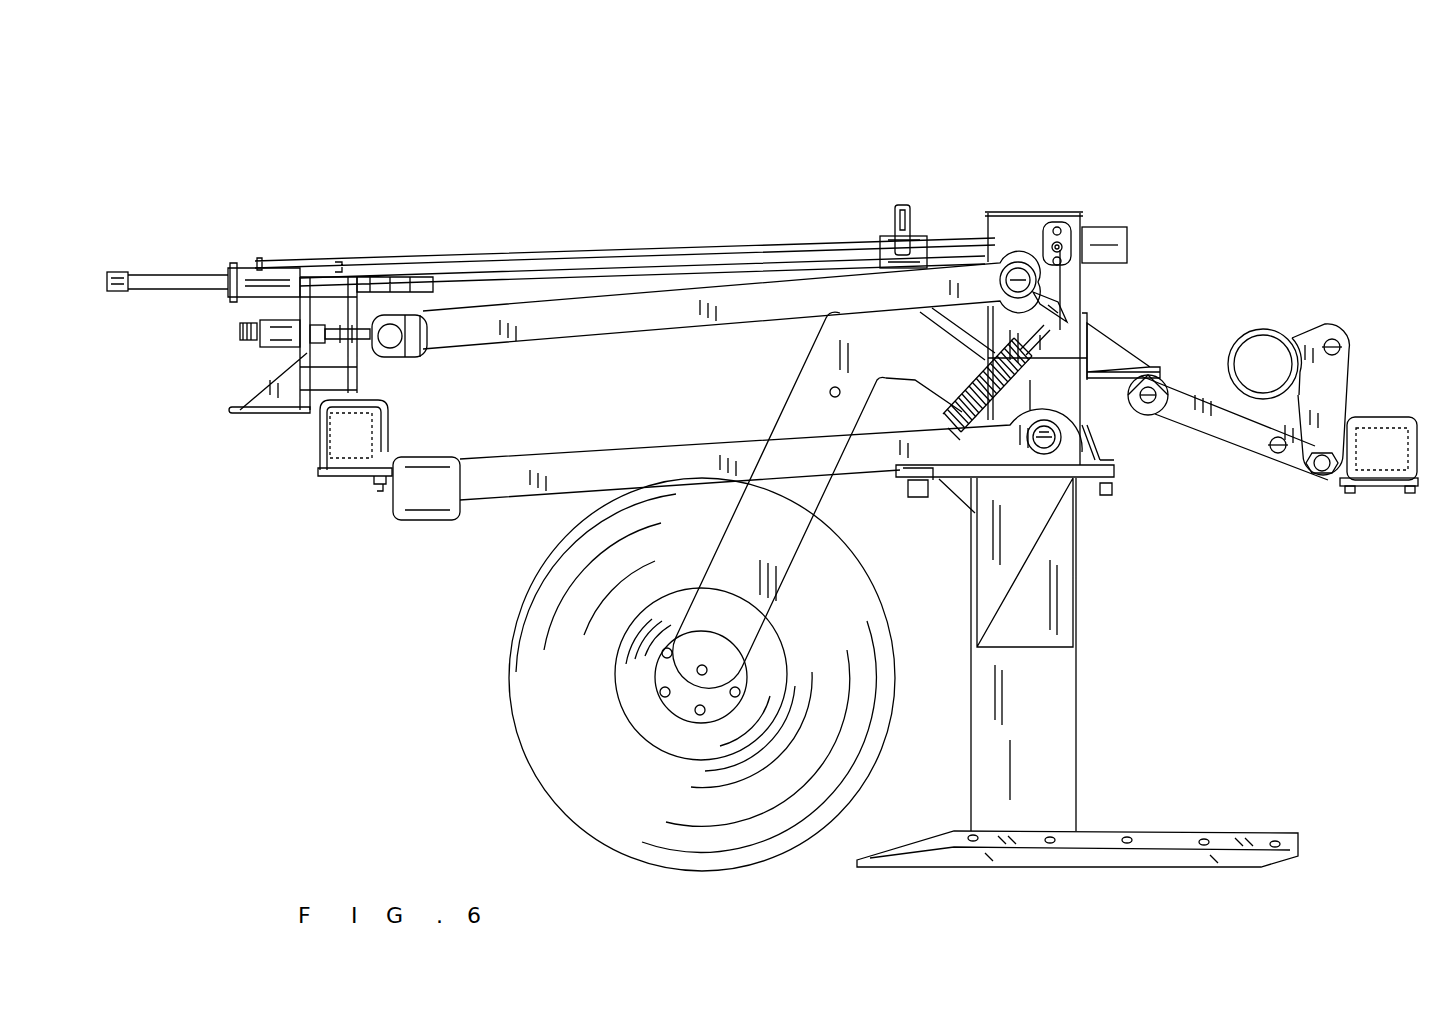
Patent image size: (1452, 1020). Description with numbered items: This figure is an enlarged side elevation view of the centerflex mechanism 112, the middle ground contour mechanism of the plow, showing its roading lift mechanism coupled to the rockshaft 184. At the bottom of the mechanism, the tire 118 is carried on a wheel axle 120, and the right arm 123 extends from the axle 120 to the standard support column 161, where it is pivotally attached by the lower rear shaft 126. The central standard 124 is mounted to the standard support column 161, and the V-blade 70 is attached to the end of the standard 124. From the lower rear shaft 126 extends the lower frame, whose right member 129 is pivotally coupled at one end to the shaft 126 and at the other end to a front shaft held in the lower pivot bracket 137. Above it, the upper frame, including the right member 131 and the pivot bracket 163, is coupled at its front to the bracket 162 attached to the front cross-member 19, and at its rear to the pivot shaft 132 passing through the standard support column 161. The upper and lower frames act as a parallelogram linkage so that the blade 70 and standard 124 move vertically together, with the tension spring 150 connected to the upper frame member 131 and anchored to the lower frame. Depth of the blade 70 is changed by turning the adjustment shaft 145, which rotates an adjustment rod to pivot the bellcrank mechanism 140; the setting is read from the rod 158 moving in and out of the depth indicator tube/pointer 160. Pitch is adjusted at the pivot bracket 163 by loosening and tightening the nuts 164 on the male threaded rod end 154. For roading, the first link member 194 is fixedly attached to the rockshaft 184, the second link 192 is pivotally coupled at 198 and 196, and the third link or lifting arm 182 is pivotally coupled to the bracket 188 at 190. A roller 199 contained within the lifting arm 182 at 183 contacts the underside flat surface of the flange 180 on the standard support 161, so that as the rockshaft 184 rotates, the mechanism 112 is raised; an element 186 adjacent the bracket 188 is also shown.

The centerflex mechanism 112 is at (1200, 206).
The adjustment shaft 145 is at (140, 273).
The depth indicator tube/pointer 160 is at (350, 258).
The rod 158 is at (560, 260).
The bellcrank mechanism 140 is at (890, 232).
The pivot shaft 132 is at (1000, 243).
The standard support column 161 is at (1023, 240).
The right member of the upper frame 131 is at (563, 322).
The pivot bracket 163 is at (407, 355).
The bracket 162 is at (270, 392).
The male threaded rod end 154 is at (240, 330).
The nuts 164 is at (305, 352).
The front cross-member 19 is at (347, 443).
The left lower pivot bracket 137 is at (370, 503).
The right member of the lower frame 129 is at (507, 487).
The lower rear shaft 126 is at (1043, 458).
The right arm 123 is at (788, 528).
The tire 118 is at (548, 707).
The wheel axle 120 is at (632, 678).
The right tension spring 150 is at (1125, 360).
The flange 180 is at (1058, 354).
The central standard 124 is at (1048, 686).
The V-blade 70 is at (1146, 840).
The roller location in lifting arm 183 is at (1147, 405).
The roller 199 is at (1135, 413).
The third link (lifting arm) 182 is at (1235, 440).
The pivot coupling 196 is at (1278, 455).
The pivot coupling 190 is at (1322, 480).
The rockshaft 184 is at (1253, 348).
The first link member 194 is at (1318, 337).
The pivot coupling 198 is at (1340, 345).
The second link 192 is at (1320, 381).
The spring box 186 is at (1383, 448).
The bracket 188 is at (1377, 493).